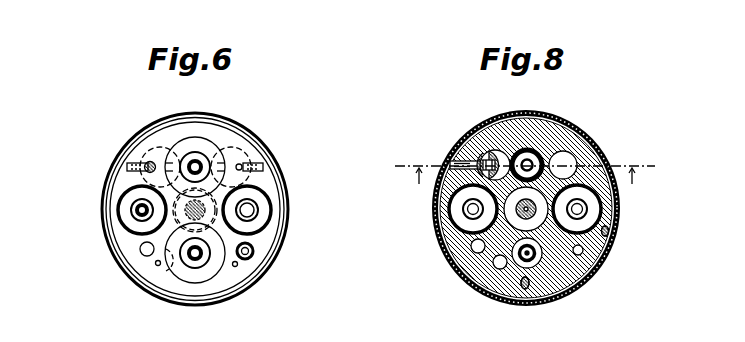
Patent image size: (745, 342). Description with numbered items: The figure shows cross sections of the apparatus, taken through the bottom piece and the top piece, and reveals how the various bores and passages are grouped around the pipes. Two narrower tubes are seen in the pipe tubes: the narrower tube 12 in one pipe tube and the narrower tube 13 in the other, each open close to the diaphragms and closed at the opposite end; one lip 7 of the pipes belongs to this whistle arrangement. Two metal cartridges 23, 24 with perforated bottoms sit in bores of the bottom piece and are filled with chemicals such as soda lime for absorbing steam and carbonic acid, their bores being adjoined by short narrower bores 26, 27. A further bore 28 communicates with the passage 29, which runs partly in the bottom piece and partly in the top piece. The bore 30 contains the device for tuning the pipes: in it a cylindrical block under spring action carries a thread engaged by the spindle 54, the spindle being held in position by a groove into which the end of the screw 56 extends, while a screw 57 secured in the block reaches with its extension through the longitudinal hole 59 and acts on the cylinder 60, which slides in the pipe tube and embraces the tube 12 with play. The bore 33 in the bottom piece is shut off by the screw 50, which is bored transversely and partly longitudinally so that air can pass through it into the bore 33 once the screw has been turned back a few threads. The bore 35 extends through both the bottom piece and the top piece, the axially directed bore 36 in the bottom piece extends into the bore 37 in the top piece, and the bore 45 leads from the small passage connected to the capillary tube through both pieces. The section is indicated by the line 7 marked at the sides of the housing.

In FIG. 8, the lip 7 is at (525, 177).
In FIG. 8, the narrower tube 12 is at (575, 158).
In FIG. 8, the narrower tube 13 is at (592, 283).
In FIG. 8, the cartridge 23 is at (449, 217).
In FIG. 8, the cartridge 24 is at (588, 208).
In FIG. 8, the narrower bore 26 is at (472, 211).
In FIG. 8, the narrower bore 27 is at (608, 235).
In FIG. 8, the bore 28 is at (598, 195).
In FIG. 6, the passage 29 is at (250, 164).
In FIG. 8, the bore 30 is at (478, 181).
In FIG. 8, the bore 33 is at (605, 265).
In FIG. 6, the bore 35 is at (140, 247).
In FIG. 8, the bore 35 is at (473, 251).
In FIG. 8, the axially directed bore 36 is at (496, 267).
In FIG. 6, the bore 37 is at (156, 262).
In FIG. 6, the bore 45 is at (237, 266).
In FIG. 6, the screw 50 is at (252, 255).
In FIG. 6, the spindle 54 is at (146, 169).
In FIG. 6, the screw 56 is at (125, 160).
In FIG. 8, the screw 57 is at (482, 156).
In FIG. 8, the longitudinal hole 59 is at (472, 127).
In FIG. 8, the cylinder 60 is at (540, 157).